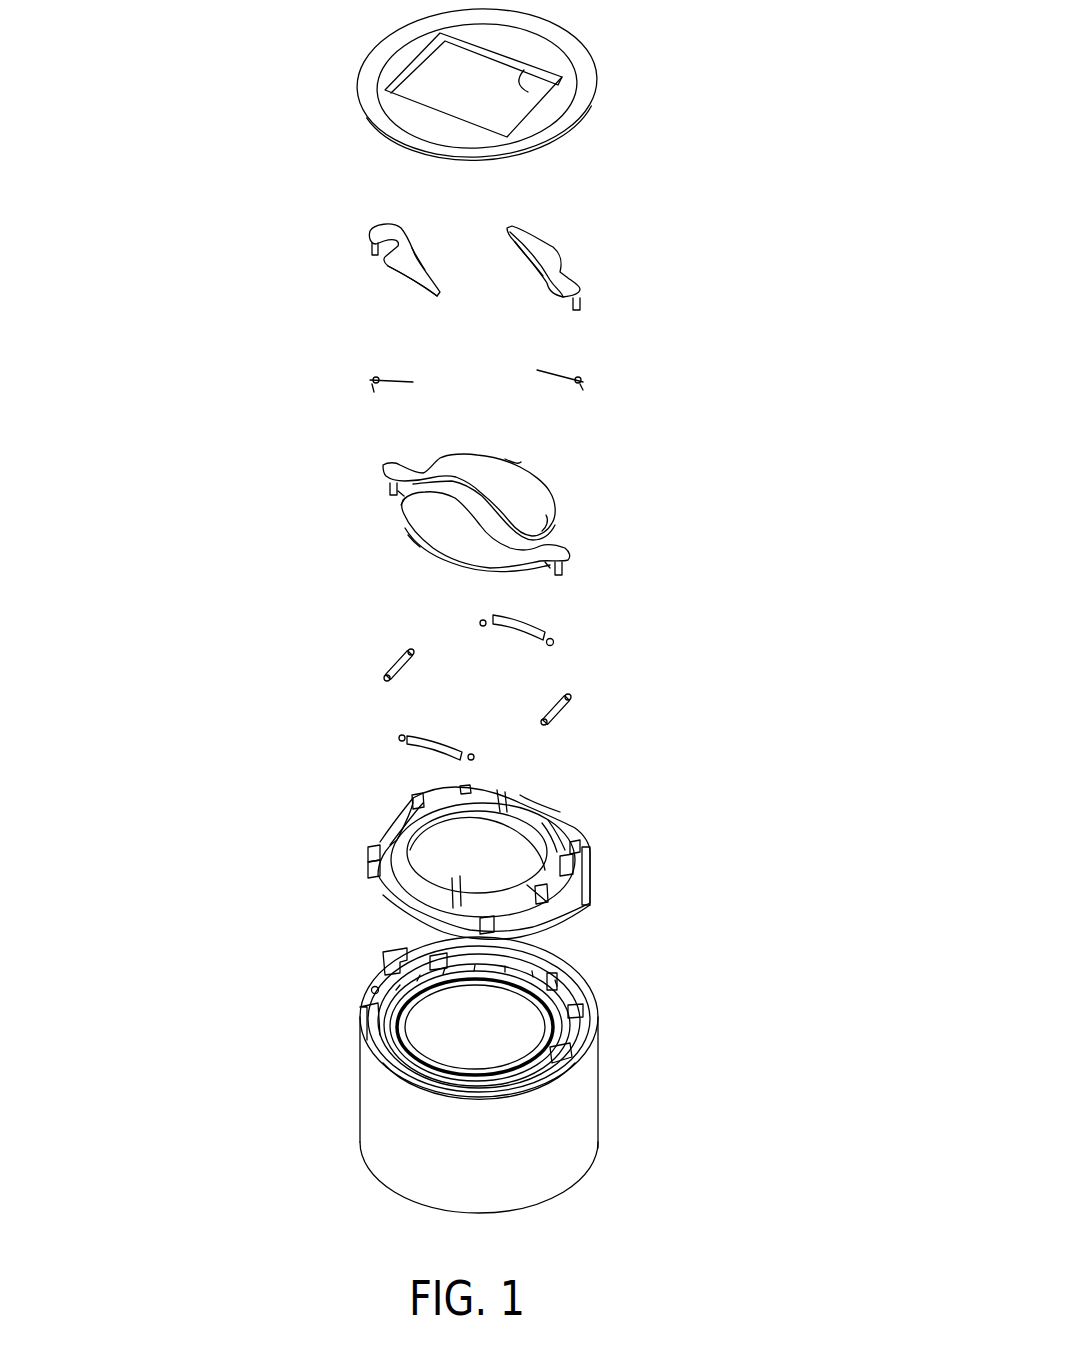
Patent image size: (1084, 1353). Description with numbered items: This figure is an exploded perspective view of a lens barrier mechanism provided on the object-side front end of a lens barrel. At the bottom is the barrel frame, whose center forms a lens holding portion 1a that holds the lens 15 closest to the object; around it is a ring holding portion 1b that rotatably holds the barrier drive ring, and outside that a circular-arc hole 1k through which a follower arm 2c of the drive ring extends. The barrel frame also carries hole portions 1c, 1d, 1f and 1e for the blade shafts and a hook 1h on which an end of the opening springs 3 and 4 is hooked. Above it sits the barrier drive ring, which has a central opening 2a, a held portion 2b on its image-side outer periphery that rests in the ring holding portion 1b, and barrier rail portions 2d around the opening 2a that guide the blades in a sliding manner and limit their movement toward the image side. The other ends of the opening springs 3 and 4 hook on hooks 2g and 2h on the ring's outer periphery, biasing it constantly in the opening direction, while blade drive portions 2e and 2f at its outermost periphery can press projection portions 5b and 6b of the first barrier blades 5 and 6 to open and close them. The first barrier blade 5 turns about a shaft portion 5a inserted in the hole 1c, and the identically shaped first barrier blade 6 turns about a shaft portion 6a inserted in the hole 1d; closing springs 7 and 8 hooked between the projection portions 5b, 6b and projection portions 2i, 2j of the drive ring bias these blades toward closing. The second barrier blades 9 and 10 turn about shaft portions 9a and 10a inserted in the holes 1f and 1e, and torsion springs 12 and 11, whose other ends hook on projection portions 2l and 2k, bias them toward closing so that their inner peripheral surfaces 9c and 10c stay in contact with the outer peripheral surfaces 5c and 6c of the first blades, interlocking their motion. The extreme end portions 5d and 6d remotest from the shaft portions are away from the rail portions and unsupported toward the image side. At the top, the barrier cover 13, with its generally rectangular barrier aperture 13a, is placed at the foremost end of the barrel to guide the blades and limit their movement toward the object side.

The barrier cover 13 is at (577, 57).
The barrier aperture 13a is at (528, 92).
The second barrier blade 9 is at (397, 265).
The shaft portion 9a is at (372, 247).
The inner peripheral surface 9c is at (418, 260).
The second barrier blade 10 is at (560, 250).
The shaft portion 10a is at (580, 300).
The inner peripheral surface 10c is at (520, 252).
The torsion spring 11 is at (583, 382).
The torsion spring 12 is at (370, 380).
The first barrier blade 6 is at (527, 502).
The shaft portion 6a is at (387, 484).
The projection portion 6b is at (399, 493).
The outer peripheral surface 6c is at (518, 460).
The extreme end portion 6d is at (545, 518).
The first barrier blade 5 is at (423, 518).
The shaft portion 5a is at (565, 570).
The projection portion 5b is at (548, 567).
The outer peripheral surface 5c is at (413, 543).
The extreme end portion 5d is at (400, 499).
The opening spring 3 is at (557, 642).
The closing spring 8 is at (400, 656).
The closing spring 7 is at (569, 708).
The opening spring 4 is at (398, 735).
The opening 2a is at (440, 857).
The held portion 2b is at (453, 817).
The follower arm 2c is at (590, 887).
The barrier rail portions 2d is at (523, 797).
The blade drive portion 2e is at (550, 893).
The blade drive portion 2f is at (400, 833).
The hook 2g is at (465, 786).
The hook 2h is at (487, 925).
The projection portion 2i is at (587, 870).
The projection portion 2j is at (387, 847).
The projection portion 2k is at (583, 850).
The projection portion 2l is at (383, 867).
The lens holding portion 1a is at (560, 1053).
The ring holding portion 1b is at (360, 1030).
The hole 1c is at (523, 1077).
The hole 1d is at (387, 963).
The hole 1e is at (590, 1060).
The hole 1f is at (370, 988).
The hook 1h is at (565, 972).
The circular-arc hole 1k is at (597, 1008).
The lens 15 is at (503, 1018).